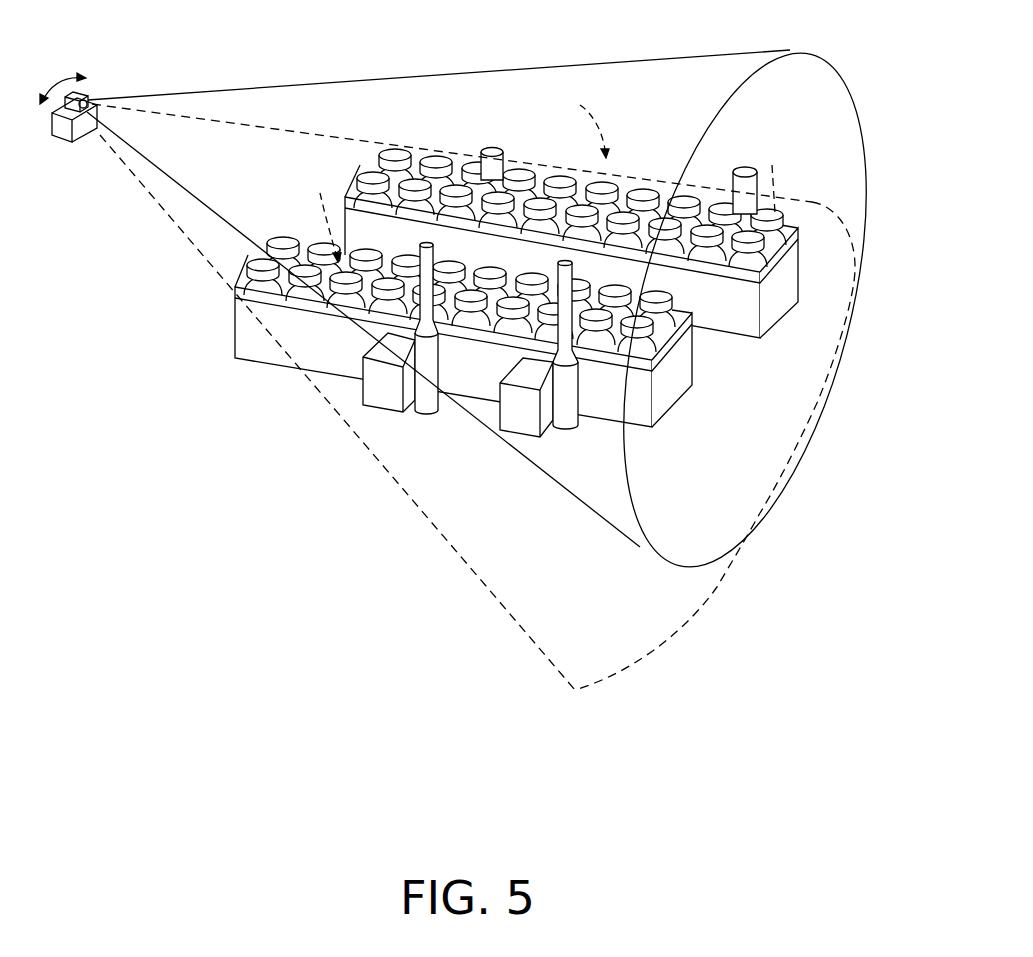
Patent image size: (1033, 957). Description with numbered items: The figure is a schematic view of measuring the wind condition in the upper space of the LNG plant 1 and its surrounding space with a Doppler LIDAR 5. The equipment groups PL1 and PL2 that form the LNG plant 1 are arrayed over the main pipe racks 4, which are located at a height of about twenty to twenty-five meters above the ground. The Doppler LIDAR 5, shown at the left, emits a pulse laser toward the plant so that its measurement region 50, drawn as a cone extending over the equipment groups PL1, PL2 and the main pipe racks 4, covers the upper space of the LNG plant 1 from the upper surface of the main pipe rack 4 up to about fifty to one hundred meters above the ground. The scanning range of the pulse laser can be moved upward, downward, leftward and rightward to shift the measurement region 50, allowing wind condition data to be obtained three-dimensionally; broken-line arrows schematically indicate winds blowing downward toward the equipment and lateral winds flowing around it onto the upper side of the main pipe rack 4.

The LNG plant 1 is at (585, 278).
The main pipe rack 4 is at (585, 278).
The Doppler LIDAR 5 is at (57, 136).
The measurement region 50 is at (378, 135).
The equipment group PL1 is at (810, 217).
The equipment group PL2 is at (608, 400).